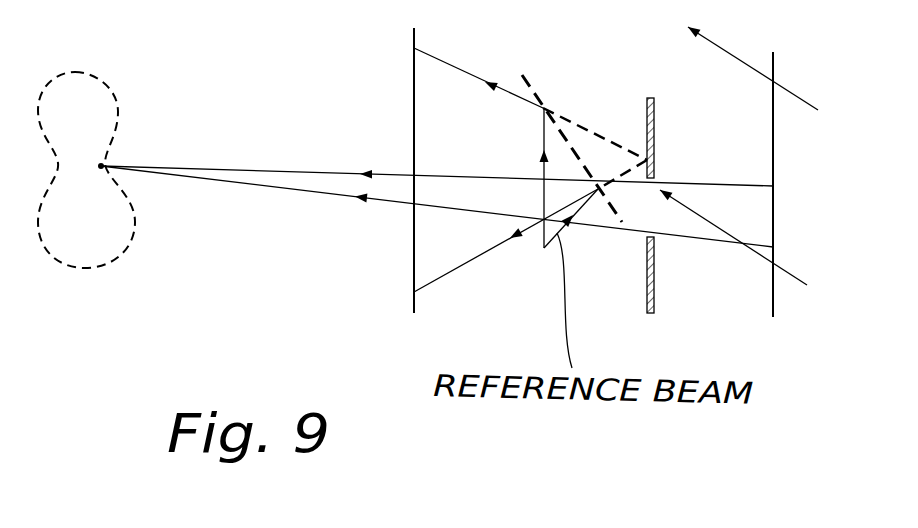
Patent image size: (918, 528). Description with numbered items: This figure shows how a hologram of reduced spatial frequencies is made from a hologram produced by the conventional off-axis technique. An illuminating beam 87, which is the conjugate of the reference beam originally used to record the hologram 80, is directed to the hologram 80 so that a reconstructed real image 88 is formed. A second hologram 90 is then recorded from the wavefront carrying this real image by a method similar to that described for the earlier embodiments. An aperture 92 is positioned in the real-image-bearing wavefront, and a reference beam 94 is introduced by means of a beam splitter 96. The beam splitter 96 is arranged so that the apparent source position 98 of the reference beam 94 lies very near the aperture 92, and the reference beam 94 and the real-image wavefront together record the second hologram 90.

The hologram 80 is at (765, 143).
The illuminating beam 87 is at (793, 105).
The reconstructed real image 88 is at (117, 97).
The second hologram 90 is at (414, 115).
The aperture 92 is at (658, 215).
The reference beam 94 is at (432, 68).
The beam splitter 96 is at (517, 81).
The apparent source position 98 is at (647, 117).